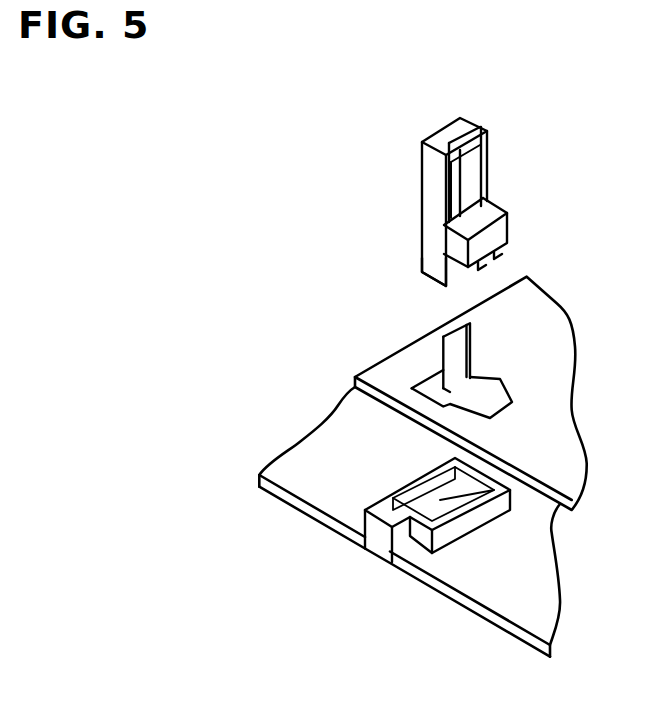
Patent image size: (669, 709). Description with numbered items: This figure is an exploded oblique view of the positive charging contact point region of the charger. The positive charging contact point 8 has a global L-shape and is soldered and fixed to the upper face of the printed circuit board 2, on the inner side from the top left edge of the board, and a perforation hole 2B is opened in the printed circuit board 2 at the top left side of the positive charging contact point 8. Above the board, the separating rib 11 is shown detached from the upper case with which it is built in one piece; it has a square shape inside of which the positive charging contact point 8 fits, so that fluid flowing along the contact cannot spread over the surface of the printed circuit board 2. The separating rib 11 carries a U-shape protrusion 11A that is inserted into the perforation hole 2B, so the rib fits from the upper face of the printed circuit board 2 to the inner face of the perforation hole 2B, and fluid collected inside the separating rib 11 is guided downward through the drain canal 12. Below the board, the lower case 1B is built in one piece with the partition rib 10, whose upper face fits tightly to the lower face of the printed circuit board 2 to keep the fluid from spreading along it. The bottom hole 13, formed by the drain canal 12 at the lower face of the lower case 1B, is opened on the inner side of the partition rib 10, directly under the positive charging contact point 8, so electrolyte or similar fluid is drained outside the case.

The printed circuit board 2 is at (566, 321).
The perforation hole 2B is at (414, 384).
The positive charging contact point 8 is at (443, 350).
The partition rib 10 is at (455, 533).
The separating rib 11 is at (418, 189).
The U-shape protrusion 11A is at (428, 249).
The drain canal 12 is at (469, 199).
The bottom hole 13 is at (438, 496).
The lower case 1B is at (527, 621).